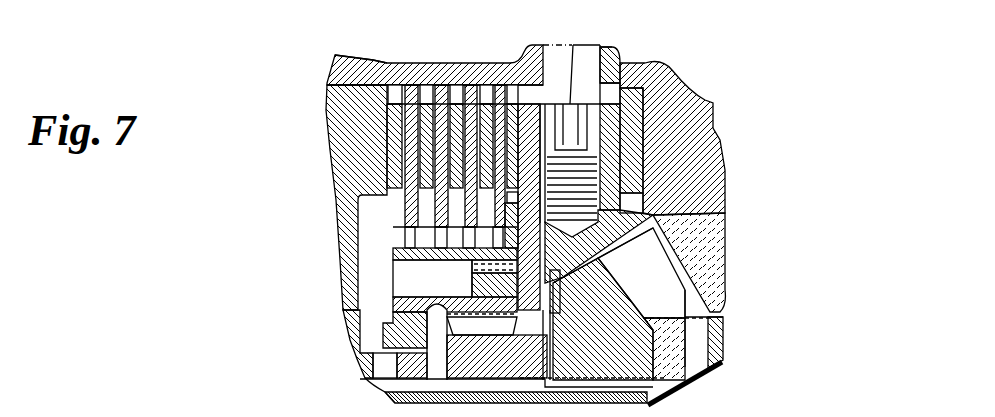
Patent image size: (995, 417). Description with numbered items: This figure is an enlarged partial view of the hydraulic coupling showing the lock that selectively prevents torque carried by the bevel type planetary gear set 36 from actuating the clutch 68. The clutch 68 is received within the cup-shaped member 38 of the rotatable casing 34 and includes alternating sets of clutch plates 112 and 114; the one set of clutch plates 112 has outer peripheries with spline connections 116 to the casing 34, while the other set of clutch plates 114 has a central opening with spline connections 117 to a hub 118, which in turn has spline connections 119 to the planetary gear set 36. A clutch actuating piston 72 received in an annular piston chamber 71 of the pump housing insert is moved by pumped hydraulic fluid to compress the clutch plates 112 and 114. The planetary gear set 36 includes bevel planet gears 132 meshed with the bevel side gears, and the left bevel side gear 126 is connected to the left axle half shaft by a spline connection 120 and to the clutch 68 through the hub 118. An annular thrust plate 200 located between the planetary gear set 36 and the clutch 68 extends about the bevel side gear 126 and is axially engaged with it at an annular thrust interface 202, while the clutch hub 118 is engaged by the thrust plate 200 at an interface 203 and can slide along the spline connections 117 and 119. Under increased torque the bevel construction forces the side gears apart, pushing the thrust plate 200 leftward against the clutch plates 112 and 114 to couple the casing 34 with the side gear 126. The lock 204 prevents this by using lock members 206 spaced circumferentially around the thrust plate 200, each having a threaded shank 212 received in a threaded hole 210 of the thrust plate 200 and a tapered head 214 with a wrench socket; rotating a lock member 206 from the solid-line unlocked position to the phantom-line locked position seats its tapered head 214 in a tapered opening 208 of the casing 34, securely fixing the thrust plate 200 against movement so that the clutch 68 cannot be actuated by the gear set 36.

The casing 34 is at (502, 58).
The bevel type planetary gear set 36 is at (745, 289).
The cup-shaped member 38 is at (397, 68).
The clutch 68 is at (410, 92).
The annular piston chamber 71 is at (333, 118).
The clutch actuating piston 72 is at (372, 121).
The clutch plates 112 is at (447, 138).
The clutch plates 114 is at (433, 173).
The spline connections 116 is at (483, 92).
The spline connections 117 is at (404, 247).
The hub 118 is at (460, 322).
The spline connections 119 is at (427, 320).
The spline connection 120 is at (657, 387).
The bevel side gear 126 is at (667, 367).
The bevel planet gears 132 is at (710, 245).
The thrust plate 200 is at (637, 110).
The annular thrust interface 202 is at (540, 313).
The interface 203 is at (517, 292).
The lock 204 is at (597, 40).
The lock member 206 is at (573, 95).
The tapered opening 208 is at (548, 68).
The threaded hole 210 is at (600, 168).
The threaded shank 212 is at (598, 203).
The tapered head 214 is at (587, 138).